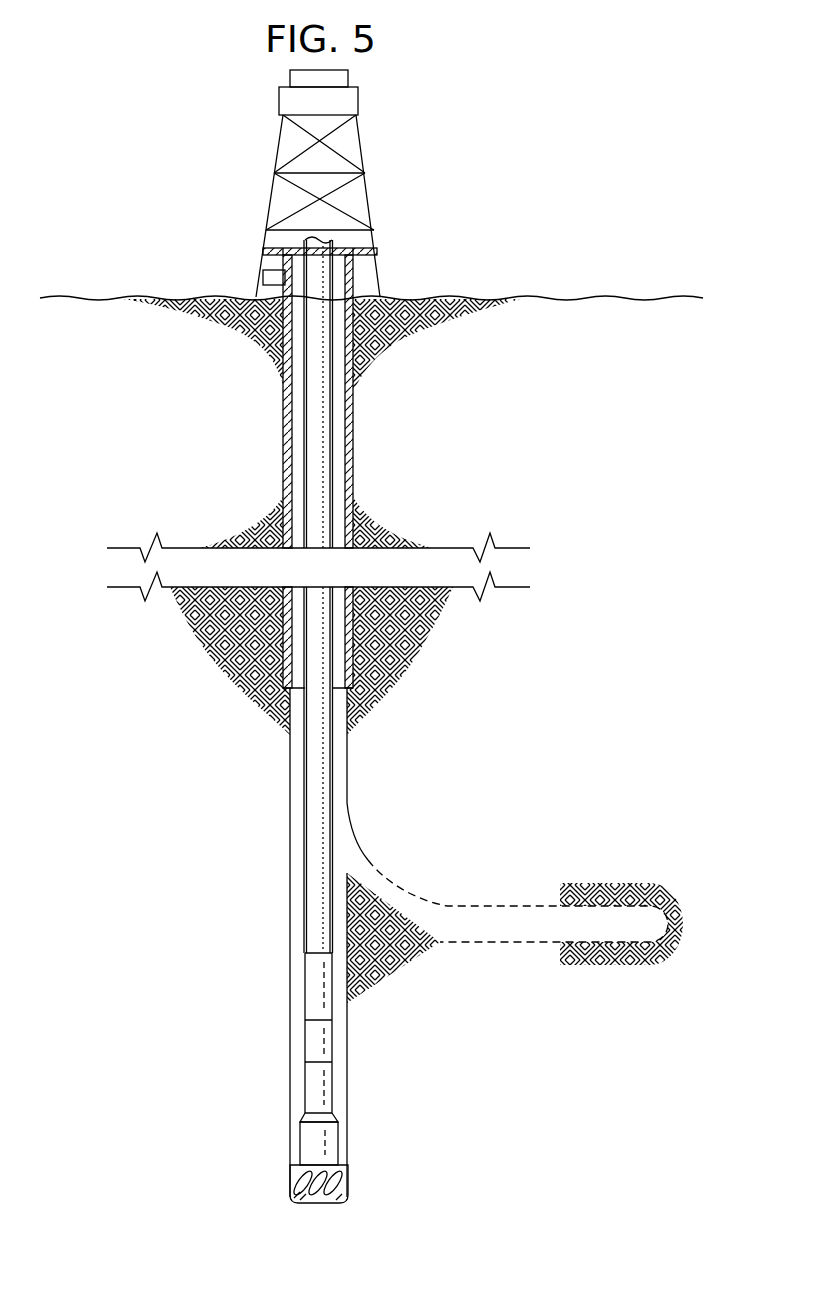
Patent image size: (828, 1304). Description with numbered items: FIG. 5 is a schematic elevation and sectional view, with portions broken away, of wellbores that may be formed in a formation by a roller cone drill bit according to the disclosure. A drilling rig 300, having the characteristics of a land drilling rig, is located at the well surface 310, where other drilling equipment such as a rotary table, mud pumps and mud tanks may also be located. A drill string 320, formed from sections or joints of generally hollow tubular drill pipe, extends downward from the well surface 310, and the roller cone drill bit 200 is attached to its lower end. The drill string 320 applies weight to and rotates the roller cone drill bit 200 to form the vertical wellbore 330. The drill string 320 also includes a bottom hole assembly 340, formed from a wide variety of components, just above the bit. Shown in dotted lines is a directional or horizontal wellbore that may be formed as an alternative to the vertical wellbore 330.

The drilling rig 300 is at (213, 121).
The well surface 310 is at (358, 275).
The drill string 320 is at (333, 410).
The wellbore 330 is at (276, 765).
The bottom hole assembly 340 is at (343, 1045).
The roller cone drill bit 200 is at (290, 1190).